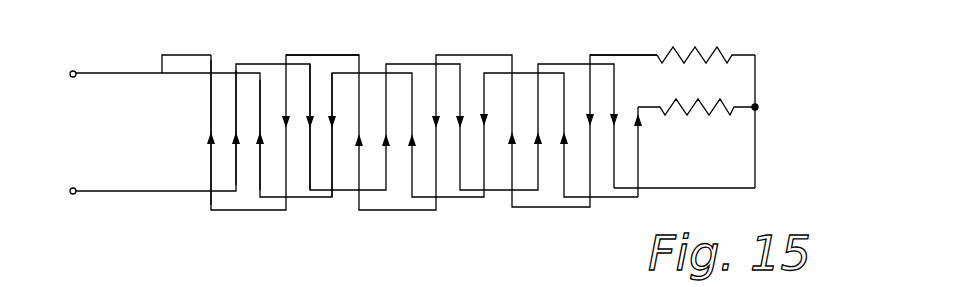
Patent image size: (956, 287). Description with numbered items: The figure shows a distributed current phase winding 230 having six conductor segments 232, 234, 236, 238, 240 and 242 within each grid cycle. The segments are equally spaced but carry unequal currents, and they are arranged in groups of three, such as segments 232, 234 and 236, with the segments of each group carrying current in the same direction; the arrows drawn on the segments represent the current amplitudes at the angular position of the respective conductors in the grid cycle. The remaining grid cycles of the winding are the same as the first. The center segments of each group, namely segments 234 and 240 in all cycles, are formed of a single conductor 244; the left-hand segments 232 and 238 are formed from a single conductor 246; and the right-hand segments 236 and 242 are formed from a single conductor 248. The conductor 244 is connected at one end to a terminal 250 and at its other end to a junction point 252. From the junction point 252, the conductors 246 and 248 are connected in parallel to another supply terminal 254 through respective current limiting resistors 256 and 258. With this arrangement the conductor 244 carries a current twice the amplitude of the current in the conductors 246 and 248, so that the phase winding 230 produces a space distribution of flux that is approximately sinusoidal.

The distributed current phase winding 230 is at (143, 60).
The conductor segment 232 is at (210, 87).
The conductor segment 234 is at (235, 108).
The conductor segment 236 is at (258, 157).
The conductor segment 238 is at (290, 28).
The conductor segment 240 is at (312, 70).
The conductor segment 242 is at (337, 93).
The conductor 244 is at (708, 194).
The conductor 246 is at (613, 55).
The conductor 248 is at (638, 162).
The terminal 250 is at (74, 194).
The junction point 252 is at (758, 107).
The supply terminal 254 is at (73, 77).
The current limiting resistor 256 is at (710, 53).
The current limiting resistor 258 is at (700, 110).